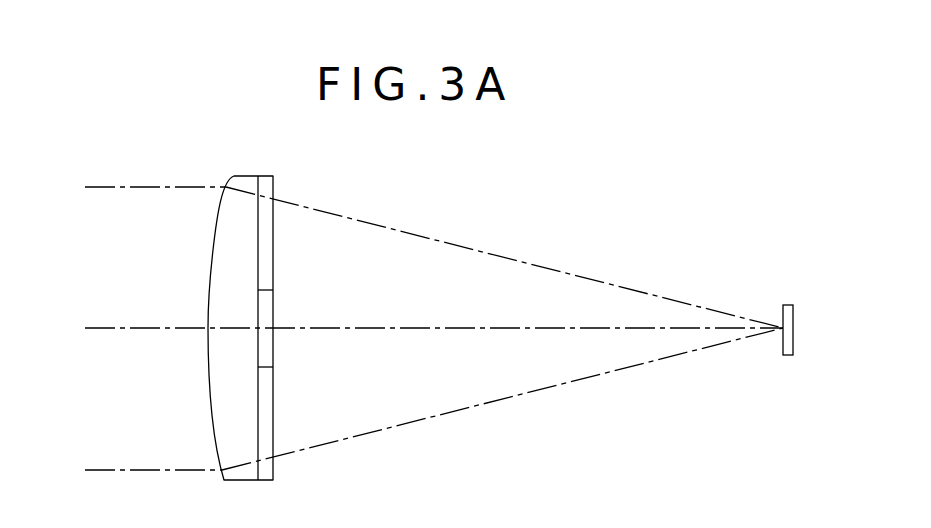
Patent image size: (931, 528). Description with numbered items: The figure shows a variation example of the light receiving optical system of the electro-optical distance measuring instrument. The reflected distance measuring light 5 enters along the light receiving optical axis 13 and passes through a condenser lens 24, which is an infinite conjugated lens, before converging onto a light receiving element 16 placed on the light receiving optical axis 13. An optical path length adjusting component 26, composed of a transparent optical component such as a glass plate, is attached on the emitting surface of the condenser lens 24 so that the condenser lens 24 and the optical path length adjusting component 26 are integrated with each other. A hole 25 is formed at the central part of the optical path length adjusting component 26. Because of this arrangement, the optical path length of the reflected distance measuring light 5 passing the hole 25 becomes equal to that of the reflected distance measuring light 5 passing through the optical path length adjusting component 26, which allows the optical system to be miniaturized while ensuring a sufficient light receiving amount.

The reflected distance measuring light 5 is at (481, 251).
The light receiving optical axis 13 is at (452, 327).
The light receiving element 16 is at (788, 357).
The condenser lens 24 is at (211, 270).
The hole 25 is at (273, 348).
The optical path length adjusting component 26 is at (275, 235).